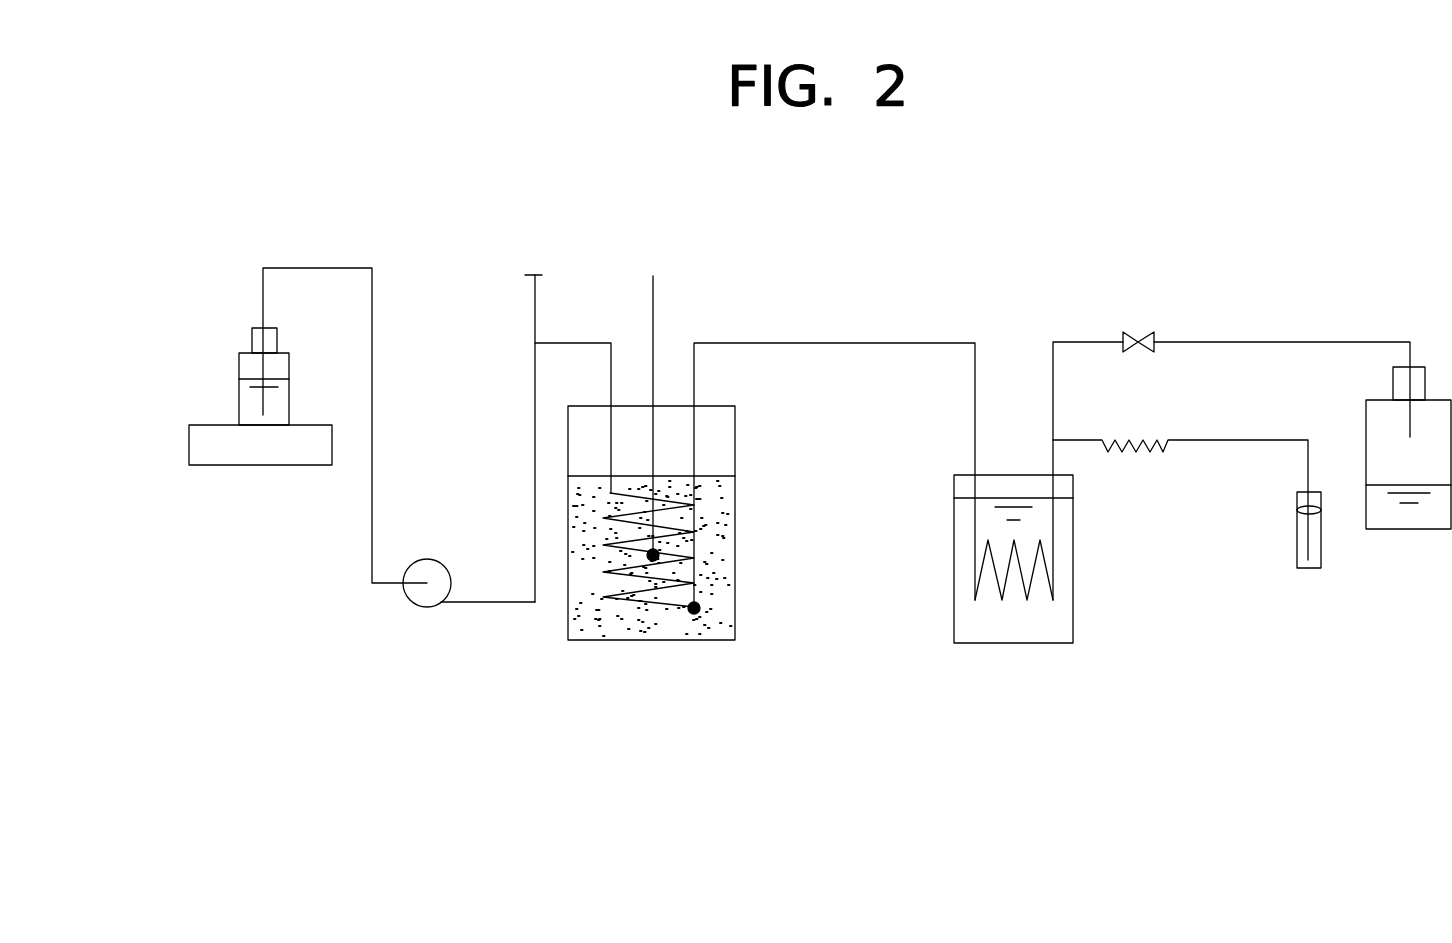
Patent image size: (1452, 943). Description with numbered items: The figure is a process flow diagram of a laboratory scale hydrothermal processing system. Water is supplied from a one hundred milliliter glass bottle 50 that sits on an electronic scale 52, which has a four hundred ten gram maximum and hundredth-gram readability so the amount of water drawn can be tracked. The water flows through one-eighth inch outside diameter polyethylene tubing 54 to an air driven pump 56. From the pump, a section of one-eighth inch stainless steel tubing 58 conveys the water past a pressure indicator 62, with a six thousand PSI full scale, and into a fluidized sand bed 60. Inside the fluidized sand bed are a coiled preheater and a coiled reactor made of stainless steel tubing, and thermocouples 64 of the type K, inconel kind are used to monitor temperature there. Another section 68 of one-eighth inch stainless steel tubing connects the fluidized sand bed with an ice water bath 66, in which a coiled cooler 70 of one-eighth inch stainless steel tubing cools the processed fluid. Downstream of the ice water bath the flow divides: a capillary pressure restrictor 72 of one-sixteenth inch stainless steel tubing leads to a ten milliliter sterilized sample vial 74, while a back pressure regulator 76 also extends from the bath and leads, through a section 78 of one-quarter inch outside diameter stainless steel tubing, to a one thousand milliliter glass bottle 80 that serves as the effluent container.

The glass bottle 50 is at (239, 363).
The electronic scale 52 is at (223, 465).
The polyethylene tubing 54 is at (320, 268).
The air driven pump 56 is at (428, 600).
The stainless steel tubing 58 is at (534, 383).
The pressure indicator 62 is at (537, 268).
The fluidized sand bed 60 is at (667, 653).
The thermocouples 64 is at (653, 307).
The section of tubing 68 is at (837, 342).
The ice water bath 66 is at (1027, 657).
The coiled cooler 70 is at (975, 577).
The capillary pressure restrictor 72 is at (1202, 440).
The sample vial 74 is at (1312, 570).
The back pressure regulator 76 is at (1140, 337).
The section of tubing 78 is at (1285, 342).
The glass bottle 80 is at (1412, 530).